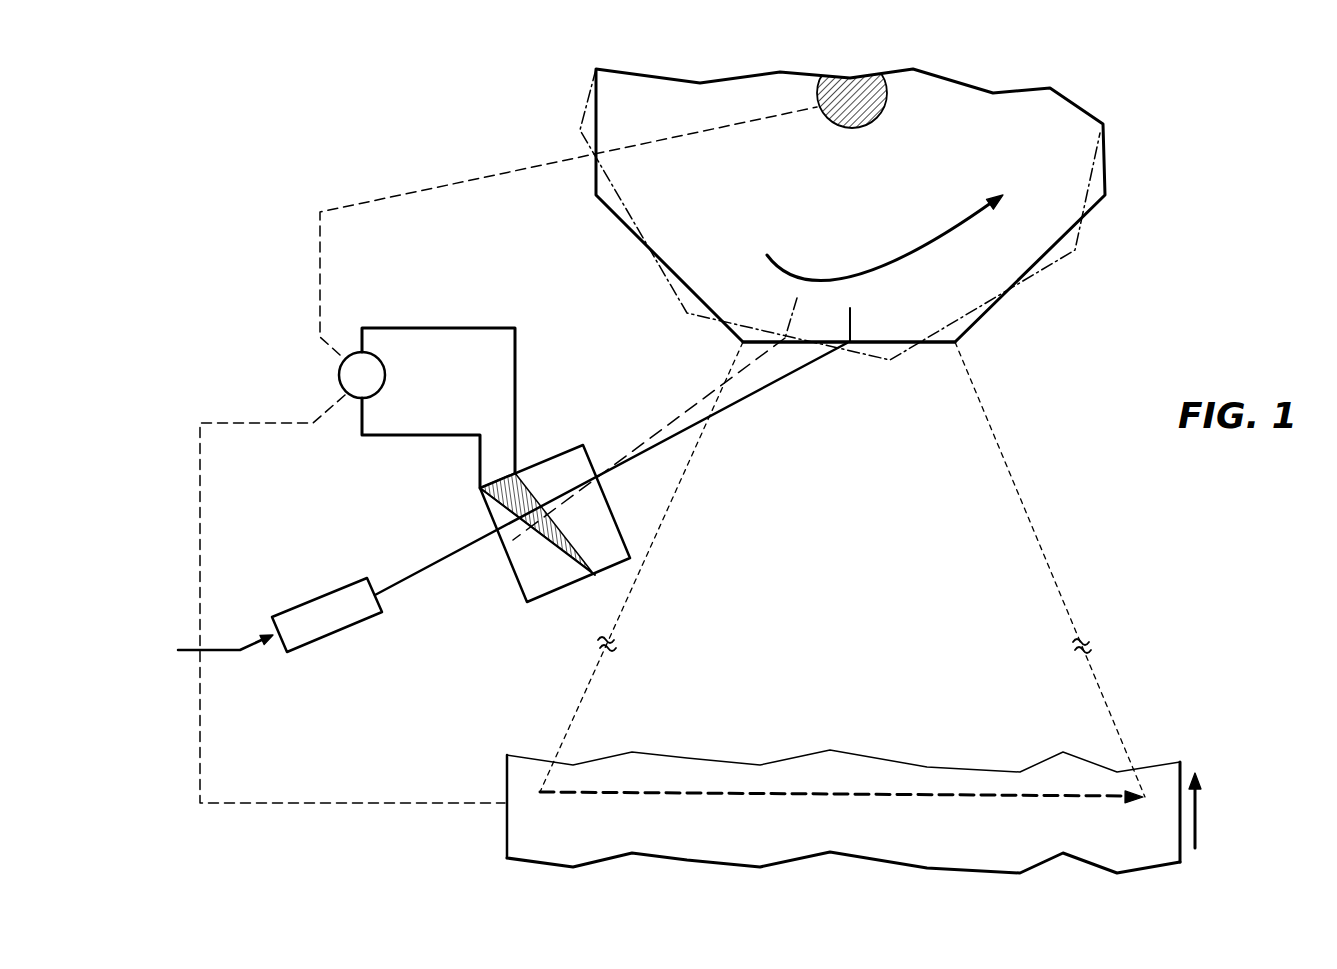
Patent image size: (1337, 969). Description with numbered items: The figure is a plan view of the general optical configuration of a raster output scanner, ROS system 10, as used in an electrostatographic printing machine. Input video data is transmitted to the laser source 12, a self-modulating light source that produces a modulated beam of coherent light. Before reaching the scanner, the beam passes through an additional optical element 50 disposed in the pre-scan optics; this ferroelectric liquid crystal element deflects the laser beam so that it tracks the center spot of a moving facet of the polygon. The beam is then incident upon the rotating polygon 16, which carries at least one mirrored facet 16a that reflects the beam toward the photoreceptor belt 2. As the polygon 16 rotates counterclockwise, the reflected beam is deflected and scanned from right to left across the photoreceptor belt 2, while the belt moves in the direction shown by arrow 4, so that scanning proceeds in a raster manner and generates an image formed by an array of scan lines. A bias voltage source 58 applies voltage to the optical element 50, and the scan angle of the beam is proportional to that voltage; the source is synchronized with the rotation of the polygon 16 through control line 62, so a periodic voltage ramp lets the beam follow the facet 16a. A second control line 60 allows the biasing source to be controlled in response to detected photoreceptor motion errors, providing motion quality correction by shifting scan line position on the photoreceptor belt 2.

The ROS system 10 is at (282, 172).
The photoreceptor belt 2 is at (508, 835).
The arrow 4 is at (1200, 817).
The laser source 12 is at (307, 603).
The rotating polygon 16 is at (1092, 212).
The mirrored facet 16a is at (957, 345).
The optical element 50 is at (565, 410).
The bias voltage source 58 is at (385, 365).
The control line 60 is at (313, 802).
The control line 62 is at (450, 185).